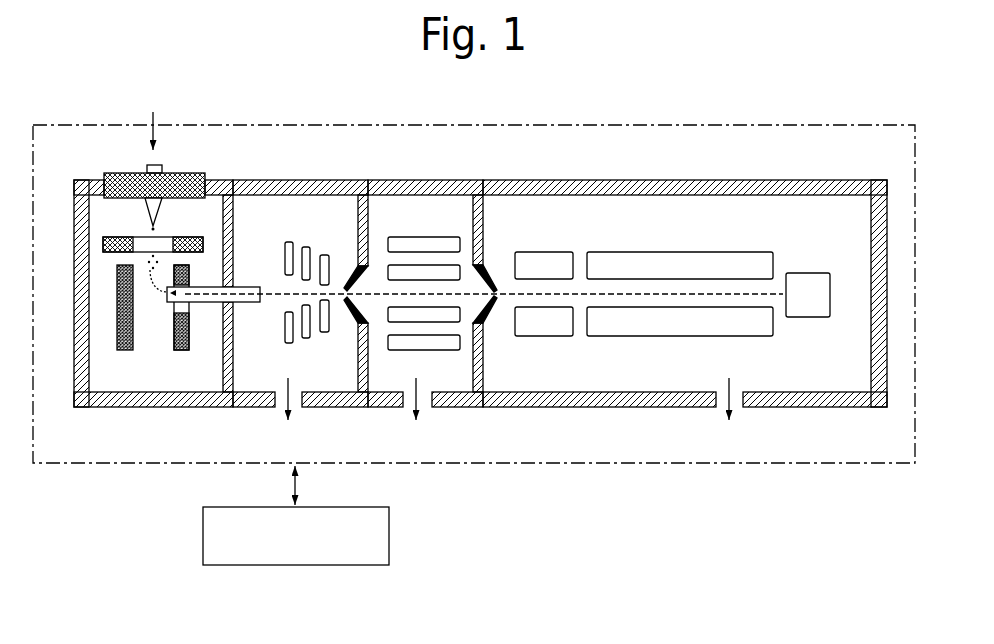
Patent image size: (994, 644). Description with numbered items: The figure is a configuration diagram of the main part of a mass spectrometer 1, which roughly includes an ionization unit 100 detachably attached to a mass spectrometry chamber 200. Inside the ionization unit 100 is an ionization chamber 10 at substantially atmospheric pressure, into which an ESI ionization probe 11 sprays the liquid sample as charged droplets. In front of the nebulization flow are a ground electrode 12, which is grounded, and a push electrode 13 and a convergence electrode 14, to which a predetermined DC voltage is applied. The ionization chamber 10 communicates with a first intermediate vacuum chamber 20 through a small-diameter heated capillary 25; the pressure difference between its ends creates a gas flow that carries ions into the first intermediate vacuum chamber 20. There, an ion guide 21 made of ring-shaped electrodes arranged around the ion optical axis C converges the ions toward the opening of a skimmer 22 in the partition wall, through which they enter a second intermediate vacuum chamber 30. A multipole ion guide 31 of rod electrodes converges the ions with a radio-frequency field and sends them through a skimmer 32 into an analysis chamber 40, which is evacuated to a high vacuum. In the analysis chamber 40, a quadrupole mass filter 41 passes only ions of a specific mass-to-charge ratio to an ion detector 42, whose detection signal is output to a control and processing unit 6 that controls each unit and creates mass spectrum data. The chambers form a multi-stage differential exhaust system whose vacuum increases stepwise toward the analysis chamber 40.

The mass spectrometer 1 is at (788, 553).
The control and processing unit 6 is at (345, 565).
The ionization chamber 10 is at (156, 378).
The ESI ionization probe 11 is at (135, 174).
The ground electrode 12 is at (130, 238).
The push electrode 13 is at (122, 352).
The convergence electrode 14 is at (180, 352).
The first intermediate vacuum chamber 20 is at (259, 380).
The ion guide 21 is at (328, 250).
The skimmer 22 is at (342, 306).
The heated capillary 25 is at (212, 303).
The second intermediate vacuum chamber 30 is at (388, 380).
The ion guide 31 is at (418, 236).
The skimmer 32 is at (497, 284).
The analysis chamber 40 is at (516, 380).
The quadrupole mass filter 41 is at (773, 244).
The ion detector 42 is at (818, 271).
The ionization unit 100 is at (82, 181).
The mass spectrometry chamber 200 is at (347, 180).
The ion optical axis C is at (272, 297).